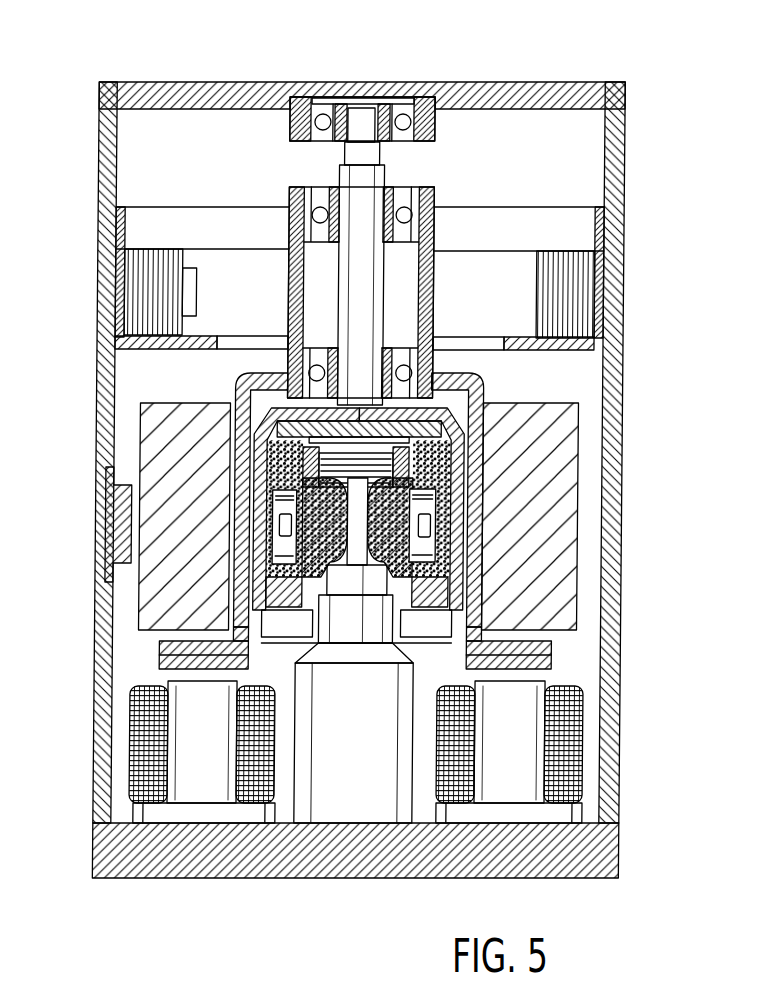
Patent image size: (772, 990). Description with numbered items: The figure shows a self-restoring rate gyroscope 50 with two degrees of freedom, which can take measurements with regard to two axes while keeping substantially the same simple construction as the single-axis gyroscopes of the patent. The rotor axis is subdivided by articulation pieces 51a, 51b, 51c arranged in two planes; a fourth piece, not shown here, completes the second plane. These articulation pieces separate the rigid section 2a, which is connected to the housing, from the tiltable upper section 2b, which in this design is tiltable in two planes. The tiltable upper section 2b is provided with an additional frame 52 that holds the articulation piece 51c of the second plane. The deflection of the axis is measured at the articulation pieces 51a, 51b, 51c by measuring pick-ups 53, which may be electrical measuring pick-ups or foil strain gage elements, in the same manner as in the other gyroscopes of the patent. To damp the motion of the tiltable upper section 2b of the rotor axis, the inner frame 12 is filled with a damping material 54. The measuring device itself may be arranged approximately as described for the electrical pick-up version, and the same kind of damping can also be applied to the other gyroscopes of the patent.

The rate gyroscope 50 is at (582, 78).
The rigid section 2a is at (358, 722).
The tiltable upper section 2b is at (291, 397).
The inner frame 12 is at (270, 542).
The additional frame 52 is at (347, 456).
The measuring pick-ups 53 is at (286, 504).
The damping material 54 is at (268, 565).
The articulation piece 51a is at (473, 572).
The articulation piece 51b is at (473, 572).
The articulation piece 51c is at (465, 550).